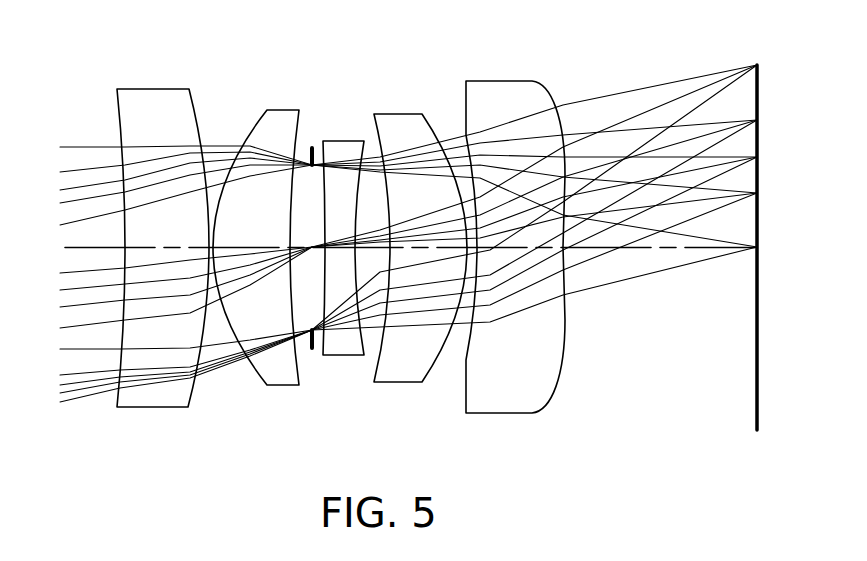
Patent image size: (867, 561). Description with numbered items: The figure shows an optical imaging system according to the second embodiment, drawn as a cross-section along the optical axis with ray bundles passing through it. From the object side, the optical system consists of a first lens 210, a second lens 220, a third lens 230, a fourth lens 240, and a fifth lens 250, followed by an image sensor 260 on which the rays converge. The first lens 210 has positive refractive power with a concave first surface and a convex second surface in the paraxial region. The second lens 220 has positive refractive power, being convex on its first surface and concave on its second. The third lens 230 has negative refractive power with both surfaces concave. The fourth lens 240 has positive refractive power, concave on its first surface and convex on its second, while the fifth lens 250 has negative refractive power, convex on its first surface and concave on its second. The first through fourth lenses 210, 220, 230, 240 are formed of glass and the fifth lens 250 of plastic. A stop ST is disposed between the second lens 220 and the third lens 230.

The first lens 210 is at (157, 87).
The second lens 220 is at (286, 109).
The third lens 230 is at (345, 139).
The fourth lens 240 is at (400, 112).
The fifth lens 250 is at (501, 79).
The image sensor 260 is at (759, 86).
The stop ST is at (318, 352).